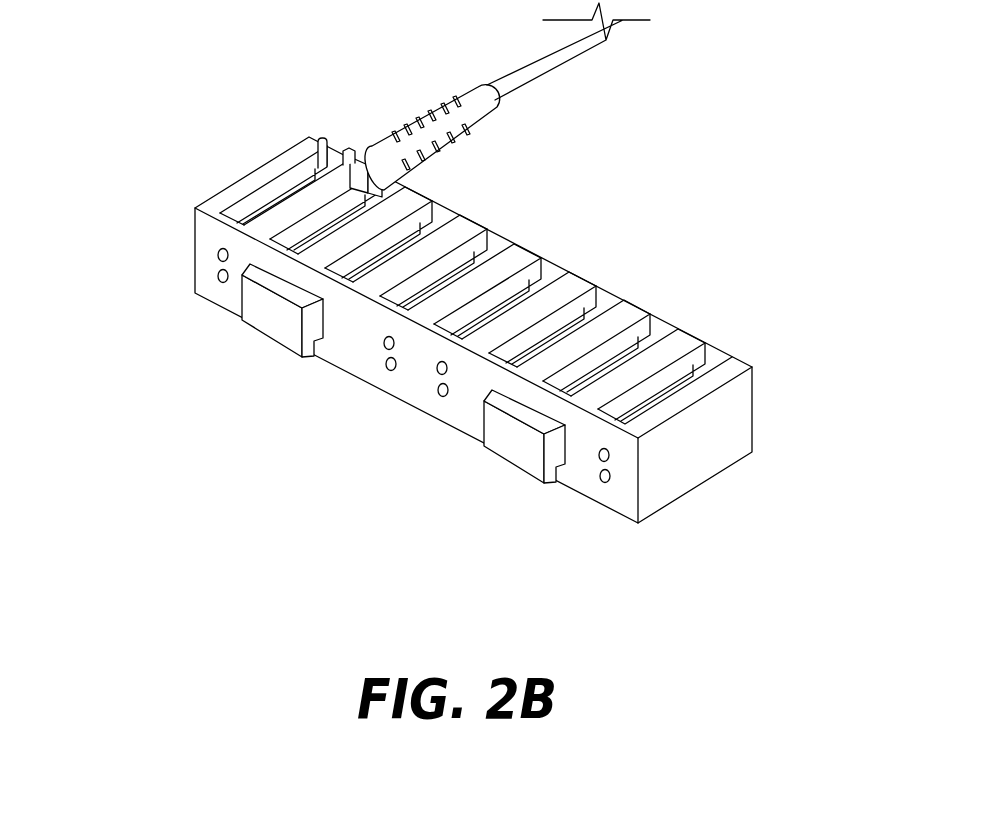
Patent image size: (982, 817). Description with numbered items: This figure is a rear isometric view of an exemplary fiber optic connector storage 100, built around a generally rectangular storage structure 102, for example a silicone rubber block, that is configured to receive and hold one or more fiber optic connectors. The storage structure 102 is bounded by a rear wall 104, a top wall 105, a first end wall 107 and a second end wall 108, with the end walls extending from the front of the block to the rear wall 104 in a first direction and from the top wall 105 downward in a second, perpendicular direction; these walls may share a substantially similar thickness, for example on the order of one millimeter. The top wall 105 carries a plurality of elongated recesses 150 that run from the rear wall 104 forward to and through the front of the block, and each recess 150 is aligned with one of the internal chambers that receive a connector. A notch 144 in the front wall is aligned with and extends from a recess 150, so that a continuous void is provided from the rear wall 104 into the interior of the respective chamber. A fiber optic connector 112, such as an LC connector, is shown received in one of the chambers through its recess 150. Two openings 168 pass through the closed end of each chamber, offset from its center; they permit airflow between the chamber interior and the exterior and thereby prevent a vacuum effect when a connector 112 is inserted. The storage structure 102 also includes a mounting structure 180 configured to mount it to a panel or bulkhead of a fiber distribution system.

The fiber optic connector storage 100 is at (630, 171).
The storage structure 102 is at (757, 384).
The rear wall 104 is at (453, 415).
The top wall 105 is at (573, 291).
The first end wall 107 is at (693, 443).
The second end wall 108 is at (180, 238).
The fiber optic connector 112 is at (430, 95).
The notch 144 is at (322, 138).
The elongated recess 150 is at (374, 198).
The opening 168 is at (384, 352).
The mounting structure 180 is at (286, 323).